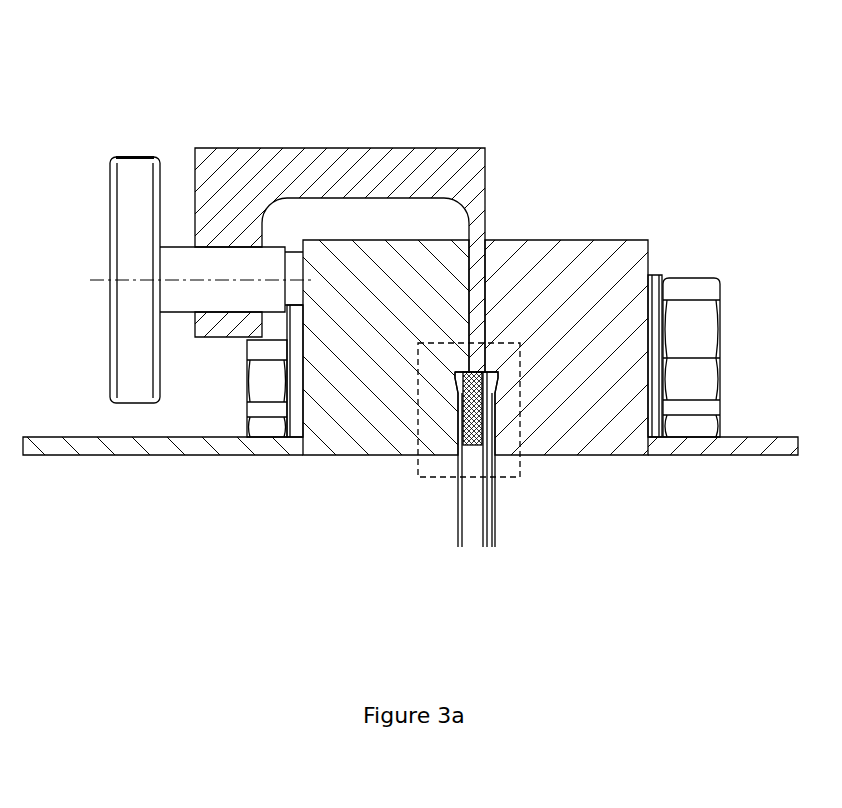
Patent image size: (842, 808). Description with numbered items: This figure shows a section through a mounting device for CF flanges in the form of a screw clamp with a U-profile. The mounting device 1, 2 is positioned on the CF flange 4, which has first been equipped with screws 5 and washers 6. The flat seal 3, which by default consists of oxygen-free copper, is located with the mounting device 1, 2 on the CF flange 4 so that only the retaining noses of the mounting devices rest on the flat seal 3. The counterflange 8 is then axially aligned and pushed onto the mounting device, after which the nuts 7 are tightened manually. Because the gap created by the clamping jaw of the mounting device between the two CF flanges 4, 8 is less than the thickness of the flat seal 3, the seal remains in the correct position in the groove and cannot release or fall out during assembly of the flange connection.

The mounting device 1 is at (266, 175).
The mounting device 2 is at (137, 183).
The flat seal 3 is at (472, 432).
The CF flange 4 is at (377, 272).
The screw 5 is at (268, 383).
The washer 6 is at (657, 365).
The nut 7 is at (692, 377).
The counterflange 8 is at (567, 275).